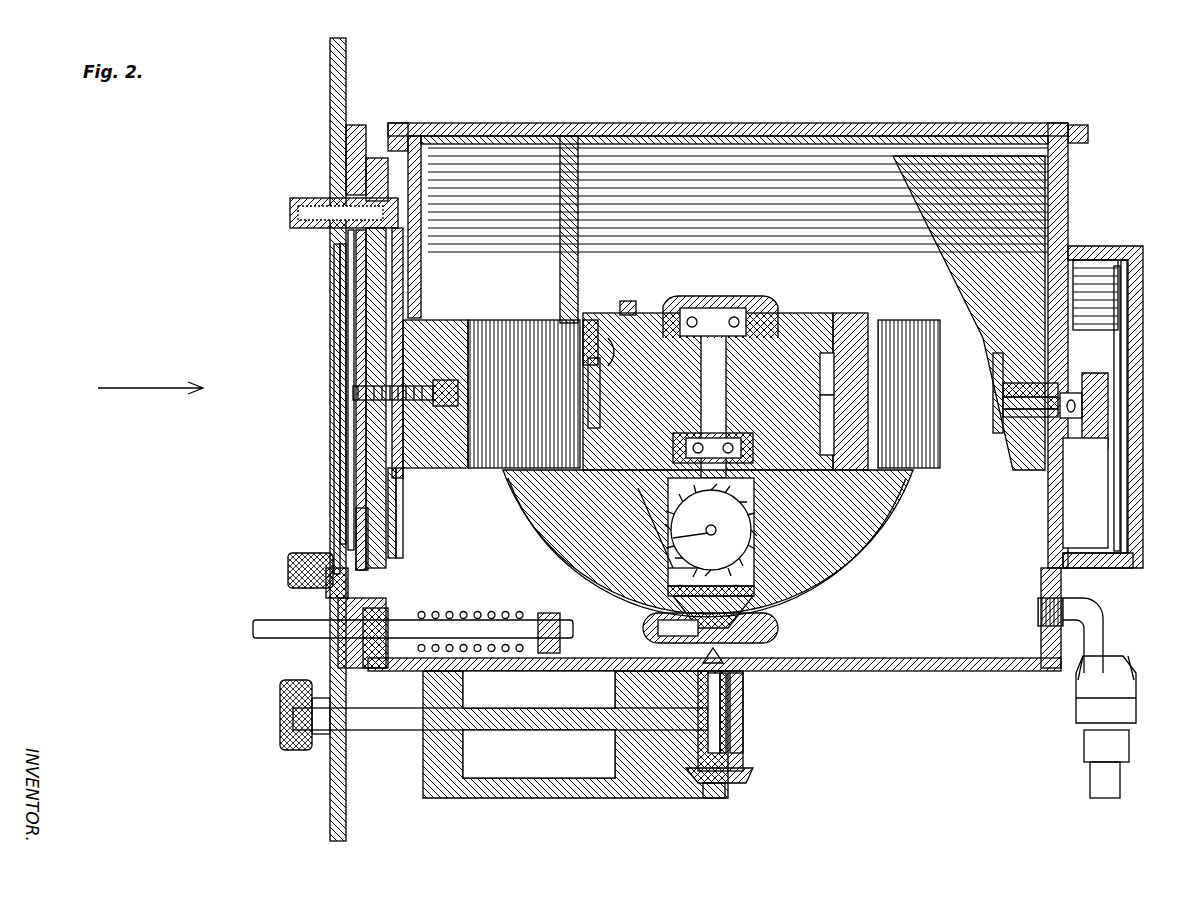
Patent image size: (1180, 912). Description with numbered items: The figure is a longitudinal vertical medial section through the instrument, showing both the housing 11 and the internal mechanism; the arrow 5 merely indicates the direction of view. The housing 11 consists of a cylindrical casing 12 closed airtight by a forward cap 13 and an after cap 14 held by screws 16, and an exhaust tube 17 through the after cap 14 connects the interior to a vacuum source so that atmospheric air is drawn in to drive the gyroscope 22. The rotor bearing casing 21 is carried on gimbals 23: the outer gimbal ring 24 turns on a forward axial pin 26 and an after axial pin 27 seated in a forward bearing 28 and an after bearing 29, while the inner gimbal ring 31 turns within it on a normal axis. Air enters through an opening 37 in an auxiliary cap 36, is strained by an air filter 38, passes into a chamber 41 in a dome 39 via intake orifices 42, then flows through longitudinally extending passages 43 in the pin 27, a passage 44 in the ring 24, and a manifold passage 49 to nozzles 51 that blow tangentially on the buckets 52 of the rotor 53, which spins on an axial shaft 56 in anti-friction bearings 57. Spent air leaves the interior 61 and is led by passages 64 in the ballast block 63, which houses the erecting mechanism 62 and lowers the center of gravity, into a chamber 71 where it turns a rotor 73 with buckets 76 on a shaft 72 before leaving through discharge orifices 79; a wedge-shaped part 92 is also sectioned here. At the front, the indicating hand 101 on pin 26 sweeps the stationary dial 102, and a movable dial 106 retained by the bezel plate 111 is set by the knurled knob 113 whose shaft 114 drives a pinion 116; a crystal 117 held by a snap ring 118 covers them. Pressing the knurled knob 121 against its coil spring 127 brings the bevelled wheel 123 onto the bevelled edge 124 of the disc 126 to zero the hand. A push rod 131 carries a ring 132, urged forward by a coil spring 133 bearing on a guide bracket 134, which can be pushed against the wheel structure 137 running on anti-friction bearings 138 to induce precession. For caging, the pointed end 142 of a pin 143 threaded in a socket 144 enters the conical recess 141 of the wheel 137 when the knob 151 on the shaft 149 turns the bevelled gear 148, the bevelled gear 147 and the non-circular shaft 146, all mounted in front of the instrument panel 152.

The direction arrow 5 is at (133, 388).
The housing 11 is at (828, 113).
The casing 12 is at (940, 92).
The forward cap 13 is at (367, 292).
The after cap 14 is at (1065, 247).
The screws 16 is at (1070, 122).
The exhaust tube 17 is at (1112, 628).
The rotor bearing casing 21 is at (792, 312).
The gyroscope 22 is at (618, 296).
The gimbals 23 is at (502, 315).
The outer gimbal ring 24 is at (925, 340).
The forward axial pin 26 is at (425, 418).
The after axial pin 27 is at (1000, 383).
The forward bearing 28 is at (365, 395).
The after bearing 29 is at (1076, 395).
The inner gimbal ring 31 is at (580, 338).
The auxiliary cap 36 is at (1100, 548).
The opening 37 is at (1098, 325).
The air filter 38 is at (1118, 448).
The dome 39 is at (1108, 345).
The chamber 41 is at (1090, 425).
The intake orifices 42 is at (1068, 465).
The longitudinally extending passages 43 is at (998, 406).
The passage 44 is at (998, 395).
The manifold passage 49 is at (585, 388).
The nozzles 51 is at (845, 400).
The buckets 52 is at (828, 364).
The rotor 53 is at (832, 310).
The axial shaft 56 is at (703, 300).
The anti-friction bearings 57 is at (752, 302).
The interior 61 is at (600, 345).
The erecting mechanism 62 is at (665, 590).
The ballast block 63 is at (800, 572).
The passages 64 is at (840, 545).
The chamber 71 is at (665, 487).
The shaft 72 is at (665, 530).
The rotor 73 is at (660, 560).
The buckets 76 is at (700, 520).
The discharge orifices 79 is at (705, 560).
The wedge block 92 is at (1000, 195).
The indicating hand 101 is at (327, 318).
The stationary dial 102 is at (333, 343).
The movable dial 106 is at (355, 505).
The bezel plate 111 is at (338, 142).
The knurled knob 113 is at (280, 555).
The shaft 114 is at (335, 565).
The pinion 116 is at (335, 600).
The crystal 117 is at (350, 262).
The snap ring 118 is at (340, 238).
The knurled knob 121 is at (282, 200).
The bevelled wheel 123 is at (395, 228).
The bevelled edge 124 is at (396, 536).
The disc 126 is at (396, 505).
The coil spring 127 is at (365, 188).
The push rod 131 is at (250, 625).
The ring 132 is at (567, 125).
The coil spring 133 is at (465, 606).
The guide bracket 134 is at (532, 606).
The wheel structure 137 is at (770, 622).
The anti-friction bearings 138 is at (745, 600).
The conical recess 141 is at (650, 625).
The pointed end 142 is at (718, 652).
The pin 143 is at (730, 698).
The socket 144 is at (735, 720).
The non-circular shaft 146 is at (735, 680).
The bevelled gear 147 is at (745, 765).
The bevelled gear 148 is at (610, 738).
The shaft 149 is at (530, 684).
The knob 151 is at (275, 720).
The panel 152 is at (325, 772).